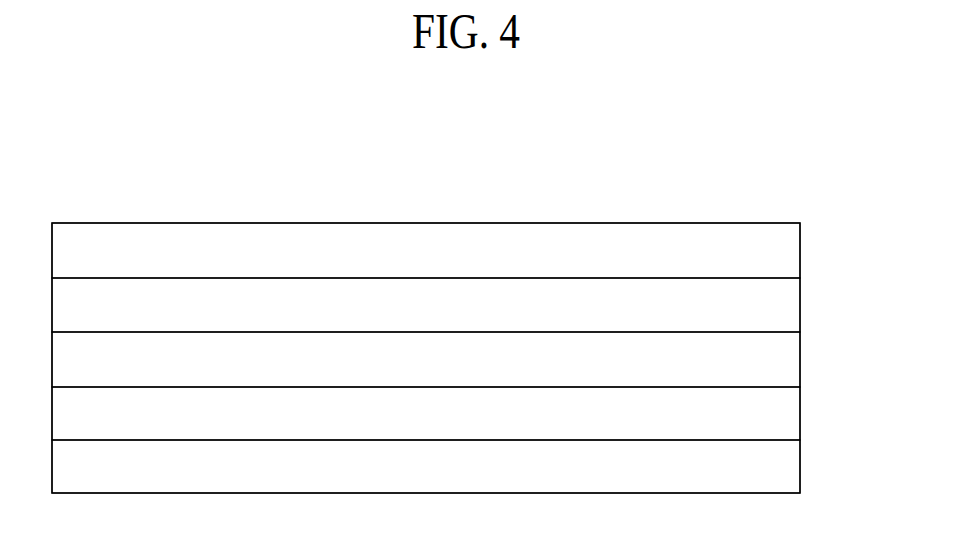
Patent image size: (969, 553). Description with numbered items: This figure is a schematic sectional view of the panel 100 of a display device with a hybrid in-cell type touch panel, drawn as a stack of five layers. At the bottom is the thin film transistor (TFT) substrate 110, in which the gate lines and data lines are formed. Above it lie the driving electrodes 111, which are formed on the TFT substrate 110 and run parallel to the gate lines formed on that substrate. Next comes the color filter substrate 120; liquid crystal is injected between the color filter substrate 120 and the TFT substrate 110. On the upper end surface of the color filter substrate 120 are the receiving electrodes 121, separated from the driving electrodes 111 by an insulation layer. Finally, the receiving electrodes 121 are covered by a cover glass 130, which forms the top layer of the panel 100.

The panel 100 is at (146, 193).
The cover glass 130 is at (800, 249).
The receiving electrodes 121 is at (800, 304).
The color filter substrate 120 is at (800, 359).
The driving electrodes 111 is at (800, 412).
The thin film transistor (TFT) substrate 110 is at (800, 465).